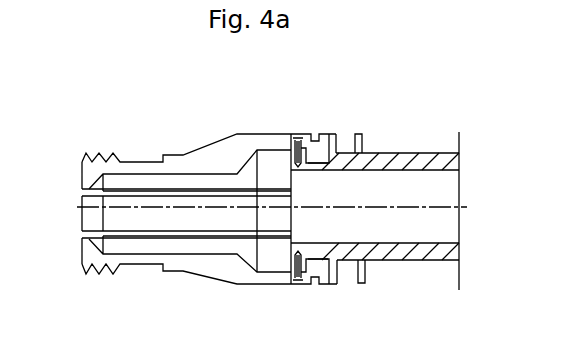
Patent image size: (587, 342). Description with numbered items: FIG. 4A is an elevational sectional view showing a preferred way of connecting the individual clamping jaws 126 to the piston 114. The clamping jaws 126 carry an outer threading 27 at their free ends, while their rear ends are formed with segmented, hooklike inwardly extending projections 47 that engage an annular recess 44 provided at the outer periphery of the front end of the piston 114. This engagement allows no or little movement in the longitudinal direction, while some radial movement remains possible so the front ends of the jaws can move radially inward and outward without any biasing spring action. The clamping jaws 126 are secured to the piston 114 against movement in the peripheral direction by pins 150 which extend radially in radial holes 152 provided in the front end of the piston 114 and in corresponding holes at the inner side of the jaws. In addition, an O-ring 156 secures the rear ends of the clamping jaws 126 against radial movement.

The outer threading 27 is at (93, 152).
The clamping jaws 126 is at (203, 157).
The O-ring 156 is at (320, 133).
The pins 150 is at (326, 283).
The radial holes 152 is at (296, 268).
The piston 114 is at (412, 164).
The annular recess 44 is at (318, 165).
The hooklike inwardly extending projections 47 is at (318, 258).